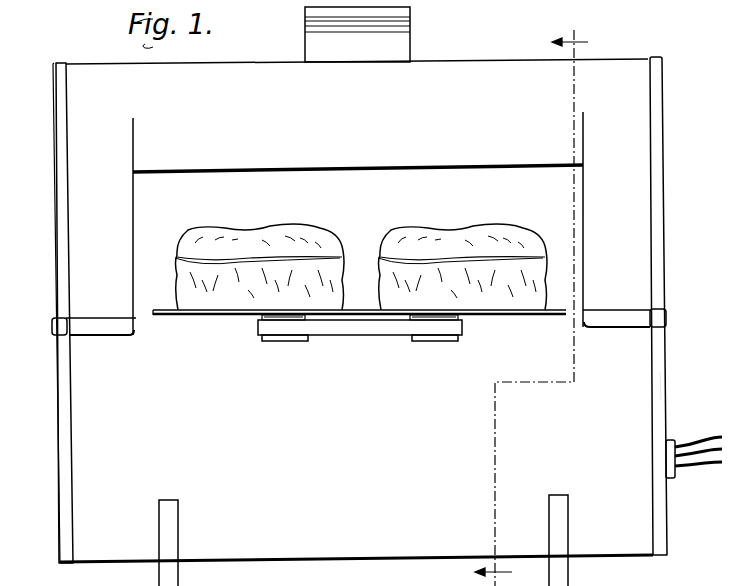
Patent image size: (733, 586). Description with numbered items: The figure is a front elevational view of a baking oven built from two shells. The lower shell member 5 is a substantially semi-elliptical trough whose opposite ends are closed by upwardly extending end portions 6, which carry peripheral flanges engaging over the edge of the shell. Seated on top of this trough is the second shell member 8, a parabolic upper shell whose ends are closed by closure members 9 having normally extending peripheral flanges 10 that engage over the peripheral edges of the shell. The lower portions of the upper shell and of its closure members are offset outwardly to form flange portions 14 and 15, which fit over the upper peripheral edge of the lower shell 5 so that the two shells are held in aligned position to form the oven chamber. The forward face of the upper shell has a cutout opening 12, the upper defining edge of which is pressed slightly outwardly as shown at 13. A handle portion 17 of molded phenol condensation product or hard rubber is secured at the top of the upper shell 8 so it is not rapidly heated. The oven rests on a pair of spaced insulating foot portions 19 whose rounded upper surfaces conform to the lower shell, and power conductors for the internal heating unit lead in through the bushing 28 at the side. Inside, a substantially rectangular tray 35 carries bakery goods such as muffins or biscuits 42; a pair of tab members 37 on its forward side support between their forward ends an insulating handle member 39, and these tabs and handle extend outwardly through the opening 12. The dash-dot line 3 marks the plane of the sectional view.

The section line 3 is at (531, 297).
The lower shell member 5 is at (235, 545).
The end portions 6 is at (56, 433).
The second shell member 8 is at (615, 60).
The closure members 9 is at (53, 153).
The peripheral flanges 10 is at (58, 62).
The cutout opening 12 is at (578, 214).
The outwardly pressed edge 13 is at (495, 150).
The flange portion 14 is at (103, 325).
The flange portion 15 is at (55, 325).
The handle portion 17 is at (400, 43).
The foot portions 19 is at (165, 577).
The bushing 28 is at (674, 446).
The tray 35 is at (163, 311).
The tab members 37 is at (280, 342).
The insulating handle member 39 is at (363, 326).
The muffins or biscuits 42 is at (222, 238).